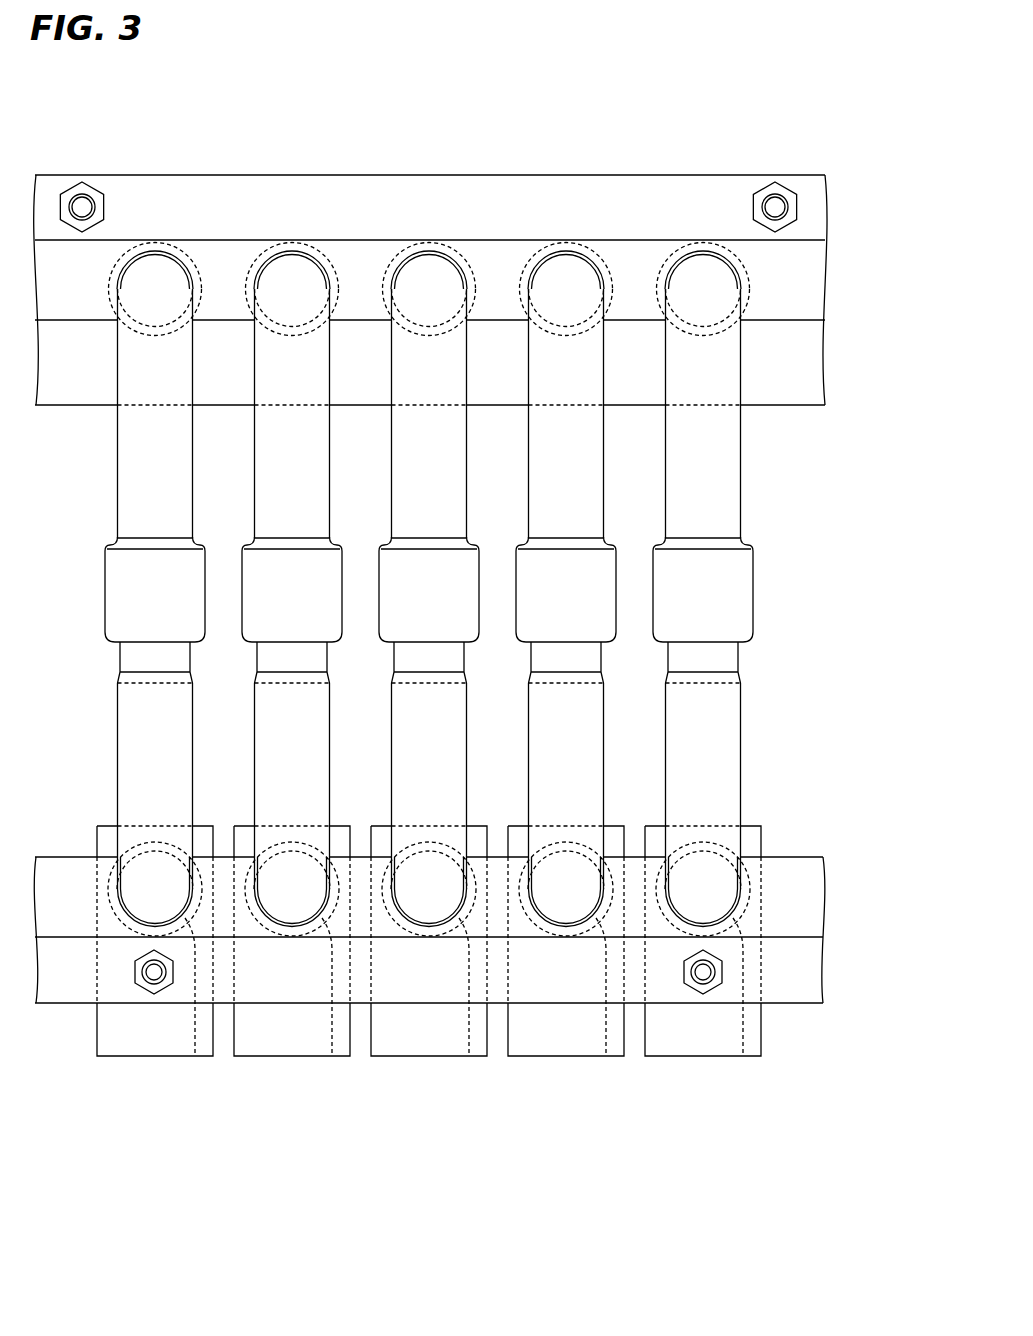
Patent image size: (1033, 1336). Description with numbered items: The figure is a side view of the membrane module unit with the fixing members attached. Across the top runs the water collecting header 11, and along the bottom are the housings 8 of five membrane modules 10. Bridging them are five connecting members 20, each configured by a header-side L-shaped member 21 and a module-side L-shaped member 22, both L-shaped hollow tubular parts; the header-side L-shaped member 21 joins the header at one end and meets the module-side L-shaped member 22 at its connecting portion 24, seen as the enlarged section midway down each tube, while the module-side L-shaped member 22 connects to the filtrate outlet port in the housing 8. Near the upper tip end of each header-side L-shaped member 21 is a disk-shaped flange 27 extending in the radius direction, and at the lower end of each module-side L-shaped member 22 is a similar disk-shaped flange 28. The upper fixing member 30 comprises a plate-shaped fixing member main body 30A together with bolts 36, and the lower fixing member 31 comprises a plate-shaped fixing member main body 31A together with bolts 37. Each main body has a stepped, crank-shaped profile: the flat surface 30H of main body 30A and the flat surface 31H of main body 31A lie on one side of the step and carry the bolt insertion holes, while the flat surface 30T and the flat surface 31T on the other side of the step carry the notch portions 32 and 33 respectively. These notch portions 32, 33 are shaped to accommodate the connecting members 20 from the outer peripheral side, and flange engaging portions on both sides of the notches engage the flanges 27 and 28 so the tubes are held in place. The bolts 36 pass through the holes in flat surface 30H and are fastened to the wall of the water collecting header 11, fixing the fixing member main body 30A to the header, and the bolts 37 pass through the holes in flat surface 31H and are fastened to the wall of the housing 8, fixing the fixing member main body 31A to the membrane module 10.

The housing 8 is at (438, 996).
The membrane module 10 is at (148, 1058).
The water collecting header 11 is at (66, 405).
The connecting member 20 is at (429, 519).
The header-side L-shaped member 21 is at (742, 470).
The module-side L-shaped member 22 is at (742, 733).
The connecting portion 24 is at (752, 586).
The flange 27 is at (190, 245).
The flange 28 is at (195, 1056).
The fixing member 30 is at (432, 269).
The fixing member main body 30A is at (432, 269).
The flat surface 30H is at (699, 185).
The flat surface 30T is at (633, 305).
The fixing member 31 is at (458, 974).
The fixing member main body 31A is at (458, 974).
The flat surface 31T is at (67, 872).
The flat surface 31H is at (64, 1003).
The notch portion 32 is at (118, 286).
The notch portion 33 is at (191, 888).
The bolt 36 is at (82, 206).
The bolt 37 is at (150, 978).